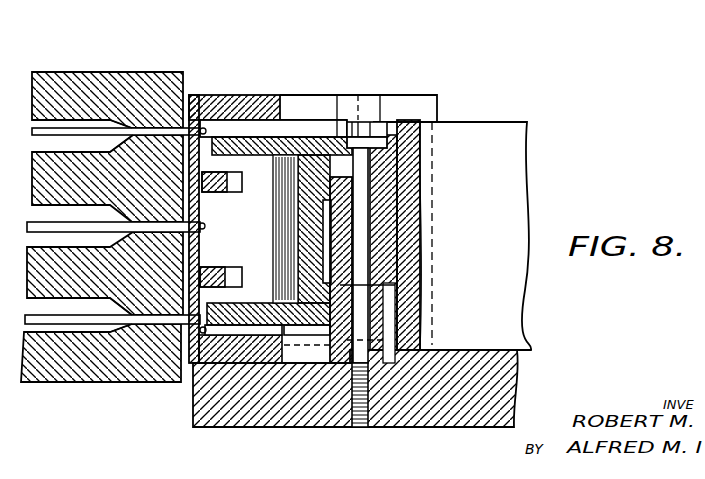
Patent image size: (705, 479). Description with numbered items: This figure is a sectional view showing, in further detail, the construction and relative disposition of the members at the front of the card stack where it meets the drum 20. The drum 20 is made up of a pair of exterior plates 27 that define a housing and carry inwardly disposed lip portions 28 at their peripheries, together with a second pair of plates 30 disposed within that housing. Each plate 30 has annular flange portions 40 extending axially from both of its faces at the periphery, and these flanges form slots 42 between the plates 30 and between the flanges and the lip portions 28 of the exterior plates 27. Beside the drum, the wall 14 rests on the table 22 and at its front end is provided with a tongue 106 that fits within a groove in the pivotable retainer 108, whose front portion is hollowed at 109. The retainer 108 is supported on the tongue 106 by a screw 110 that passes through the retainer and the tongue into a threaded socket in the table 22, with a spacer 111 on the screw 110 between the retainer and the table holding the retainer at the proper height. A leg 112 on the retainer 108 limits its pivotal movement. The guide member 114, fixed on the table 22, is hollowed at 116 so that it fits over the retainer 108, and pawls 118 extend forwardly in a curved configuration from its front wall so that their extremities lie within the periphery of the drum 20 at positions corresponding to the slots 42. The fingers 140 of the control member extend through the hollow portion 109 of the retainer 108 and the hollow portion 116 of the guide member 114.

The wall 14 is at (520, 172).
The drum 20 is at (103, 232).
The table 22 is at (453, 410).
The exterior plates 27 is at (42, 85).
The lip portions 28 is at (153, 138).
The plates 30 is at (24, 228).
The annular flange portions 40 is at (292, 251).
The slots 42 is at (82, 130).
The tongue 106 is at (345, 248).
The pivotable retainer 108 is at (260, 302).
The hollowed portion 109 is at (245, 157).
The screw 110 is at (358, 427).
The spacer 111 is at (383, 340).
The leg 112 is at (312, 203).
The guide member 114 is at (222, 88).
The hollowed portion 116 is at (332, 120).
The pawls 118 is at (235, 93).
The fingers 140 is at (220, 192).